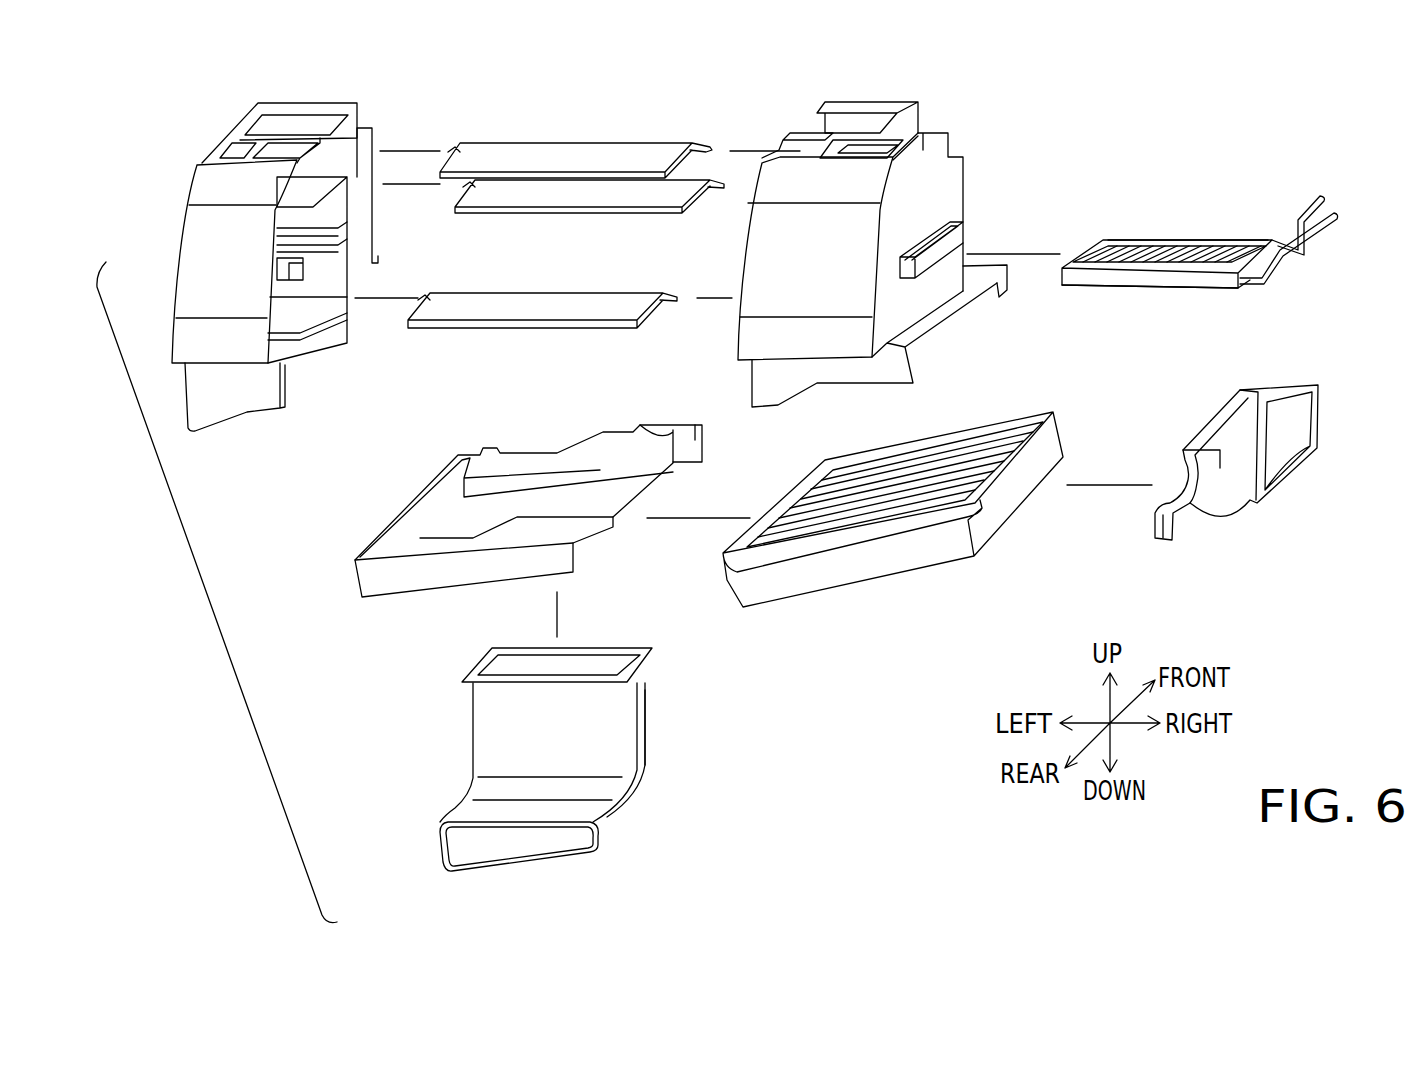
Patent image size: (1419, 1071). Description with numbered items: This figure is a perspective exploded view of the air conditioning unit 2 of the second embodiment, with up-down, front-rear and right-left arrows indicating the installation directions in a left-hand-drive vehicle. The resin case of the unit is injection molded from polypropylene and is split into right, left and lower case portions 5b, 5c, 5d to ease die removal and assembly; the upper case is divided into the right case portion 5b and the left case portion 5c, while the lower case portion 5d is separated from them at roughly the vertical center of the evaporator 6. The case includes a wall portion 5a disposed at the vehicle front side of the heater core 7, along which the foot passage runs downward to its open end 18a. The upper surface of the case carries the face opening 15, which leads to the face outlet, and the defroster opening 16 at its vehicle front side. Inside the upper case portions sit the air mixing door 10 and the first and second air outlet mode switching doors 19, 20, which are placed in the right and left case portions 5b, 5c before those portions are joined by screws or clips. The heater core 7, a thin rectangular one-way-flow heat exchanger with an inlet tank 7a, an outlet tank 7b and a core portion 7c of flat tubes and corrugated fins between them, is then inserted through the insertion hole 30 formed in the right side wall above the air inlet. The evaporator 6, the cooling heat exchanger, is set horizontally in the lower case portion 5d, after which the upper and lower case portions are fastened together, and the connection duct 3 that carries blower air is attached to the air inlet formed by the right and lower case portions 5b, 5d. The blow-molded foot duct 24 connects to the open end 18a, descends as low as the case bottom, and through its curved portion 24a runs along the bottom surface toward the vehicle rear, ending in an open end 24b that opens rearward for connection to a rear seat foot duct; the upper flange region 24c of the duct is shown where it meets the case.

The air conditioning unit 2 is at (973, 116).
The connection duct 3 is at (1267, 392).
The wall portion 5a is at (350, 205).
The right case portion 5b is at (935, 200).
The left case portion 5c is at (185, 223).
The lower case portion 5d is at (468, 583).
The evaporator 6 is at (838, 582).
The heater core 7 is at (1202, 209).
The inlet tank 7a is at (1222, 237).
The outlet tank 7b is at (1104, 282).
The core portion 7c is at (1090, 255).
The air mixing door 10 is at (494, 302).
The face opening 15 is at (293, 148).
The defroster opening 16 is at (271, 117).
The open end 18a is at (363, 273).
The first air outlet mode switching door 19 is at (561, 213).
The second air outlet mode switching door 20 is at (543, 152).
The foot duct 24 is at (664, 672).
The curved portion 24a is at (640, 788).
The open end 24b is at (508, 848).
The duct flange 24c is at (465, 678).
The insertion hole 30 is at (966, 236).